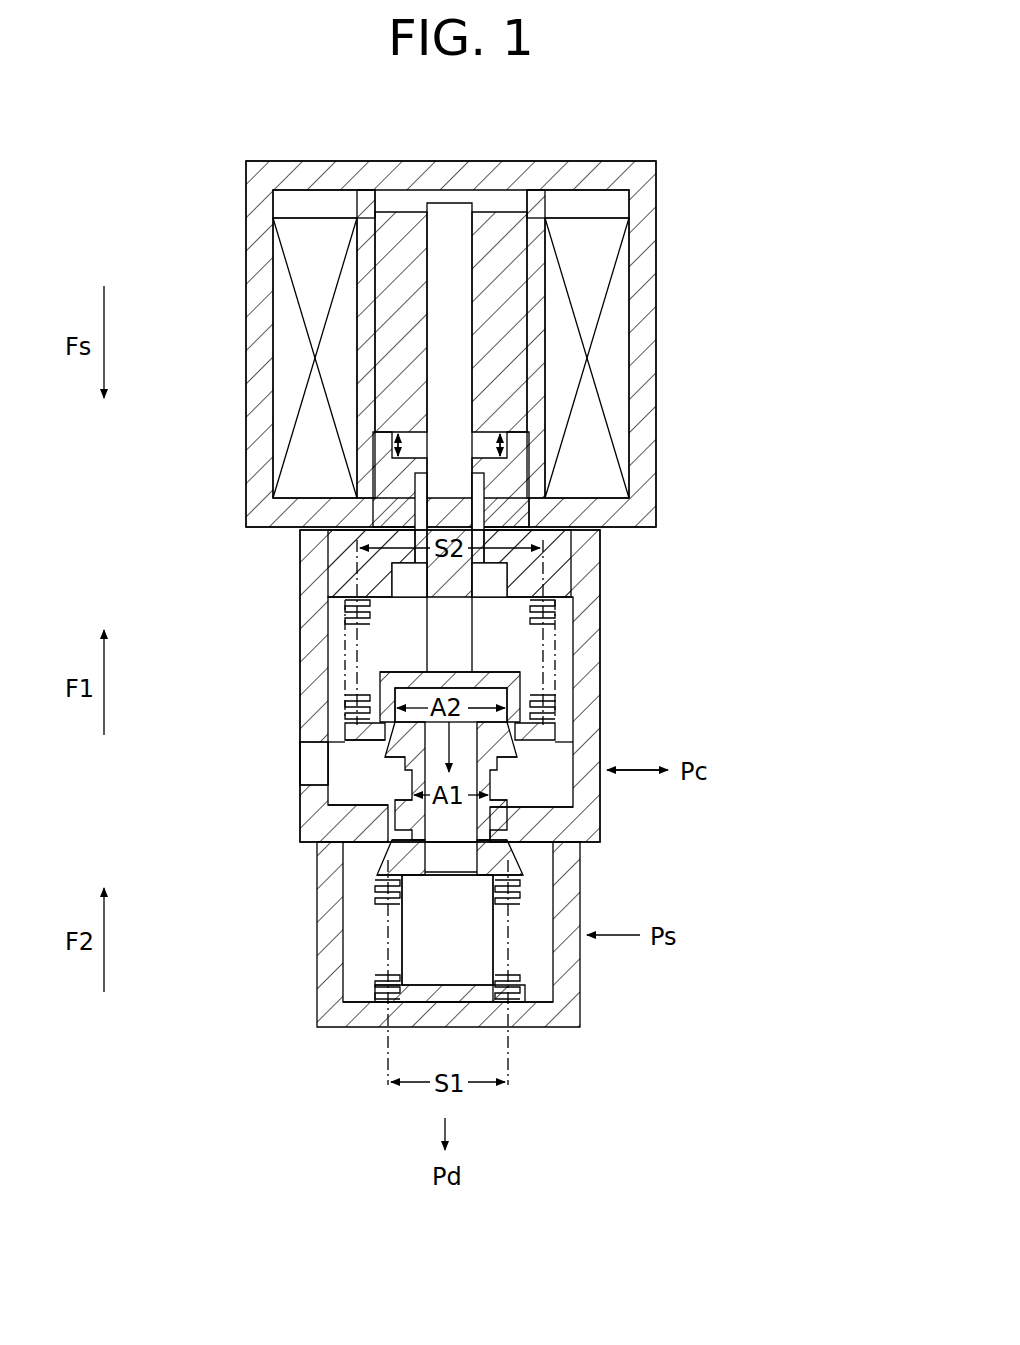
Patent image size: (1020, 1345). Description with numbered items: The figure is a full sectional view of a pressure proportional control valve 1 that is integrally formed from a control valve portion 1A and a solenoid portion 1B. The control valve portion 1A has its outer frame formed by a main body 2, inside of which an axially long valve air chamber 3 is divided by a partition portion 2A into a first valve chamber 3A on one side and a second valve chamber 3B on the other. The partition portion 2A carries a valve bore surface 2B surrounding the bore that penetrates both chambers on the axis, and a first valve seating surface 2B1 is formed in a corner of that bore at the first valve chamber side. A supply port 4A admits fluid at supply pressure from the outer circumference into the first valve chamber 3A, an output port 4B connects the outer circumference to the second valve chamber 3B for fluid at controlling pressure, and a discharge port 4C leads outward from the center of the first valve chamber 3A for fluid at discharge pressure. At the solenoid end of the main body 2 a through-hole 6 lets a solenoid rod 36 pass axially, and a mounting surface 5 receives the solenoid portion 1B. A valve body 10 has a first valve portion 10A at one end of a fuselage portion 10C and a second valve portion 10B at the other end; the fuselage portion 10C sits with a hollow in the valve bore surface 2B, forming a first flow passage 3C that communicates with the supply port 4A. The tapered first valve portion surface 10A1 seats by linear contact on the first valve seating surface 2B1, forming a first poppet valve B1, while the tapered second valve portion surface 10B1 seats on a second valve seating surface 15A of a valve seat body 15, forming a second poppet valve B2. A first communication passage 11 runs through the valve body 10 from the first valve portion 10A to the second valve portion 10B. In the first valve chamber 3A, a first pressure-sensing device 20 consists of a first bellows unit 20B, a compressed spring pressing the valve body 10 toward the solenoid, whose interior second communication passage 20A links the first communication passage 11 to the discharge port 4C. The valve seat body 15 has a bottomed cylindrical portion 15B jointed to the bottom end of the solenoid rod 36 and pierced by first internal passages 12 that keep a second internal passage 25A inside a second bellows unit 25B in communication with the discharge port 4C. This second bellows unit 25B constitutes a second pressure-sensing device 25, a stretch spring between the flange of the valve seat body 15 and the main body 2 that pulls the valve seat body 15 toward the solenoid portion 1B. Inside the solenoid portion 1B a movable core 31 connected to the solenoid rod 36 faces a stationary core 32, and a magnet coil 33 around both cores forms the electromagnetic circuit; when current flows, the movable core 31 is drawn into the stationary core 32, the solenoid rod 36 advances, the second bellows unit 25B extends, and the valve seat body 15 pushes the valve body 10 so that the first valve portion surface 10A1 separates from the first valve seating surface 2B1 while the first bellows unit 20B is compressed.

The control valve 1 is at (699, 207).
The control valve portion 1A is at (606, 558).
The solenoid portion 1B is at (660, 400).
The main body 2 is at (302, 580).
The partition portion 2A is at (548, 815).
The valve bore surface 2B is at (440, 850).
The first valve seating surface 2B1 is at (512, 878).
The valve air chamber 3 is at (542, 790).
The first valve chamber 3A is at (505, 960).
The second valve chamber 3B is at (540, 745).
The first flow passage 3C is at (395, 825).
The supply port 4A is at (330, 933).
The output port 4B is at (316, 757).
The discharge port 4C is at (470, 1020).
The mounting surface 5 is at (545, 525).
The through-hole 6 is at (415, 522).
The valve body 10 is at (378, 872).
The first valve portion 10A is at (372, 870).
The first valve portion surface 10A1 is at (390, 858).
The second valve portion 10B is at (552, 768).
The second valve portion surface 10B1 is at (362, 765).
The fuselage portion 10C is at (430, 935).
The first communication passage 11 is at (500, 895).
The first internal passage 12 is at (436, 668).
The valve seat body 15 is at (372, 655).
The second valve seating surface 15A is at (372, 700).
The bottomed cylindrical portion 15B is at (385, 665).
The first pressure-sensing device 20 is at (560, 978).
The second communication passage 20A is at (380, 985).
The first bellows unit 20B is at (520, 1000).
The second pressure-sensing device 25 is at (555, 700).
The second internal passage 25A is at (555, 680).
The second bellows unit 25B is at (520, 600).
The movable core 31 is at (510, 265).
The stationary core 32 is at (390, 480).
The magnet coil 33 is at (292, 356).
The solenoid rod 36 is at (445, 295).
The first poppet valve B1 is at (470, 820).
The second poppet valve B2 is at (515, 640).